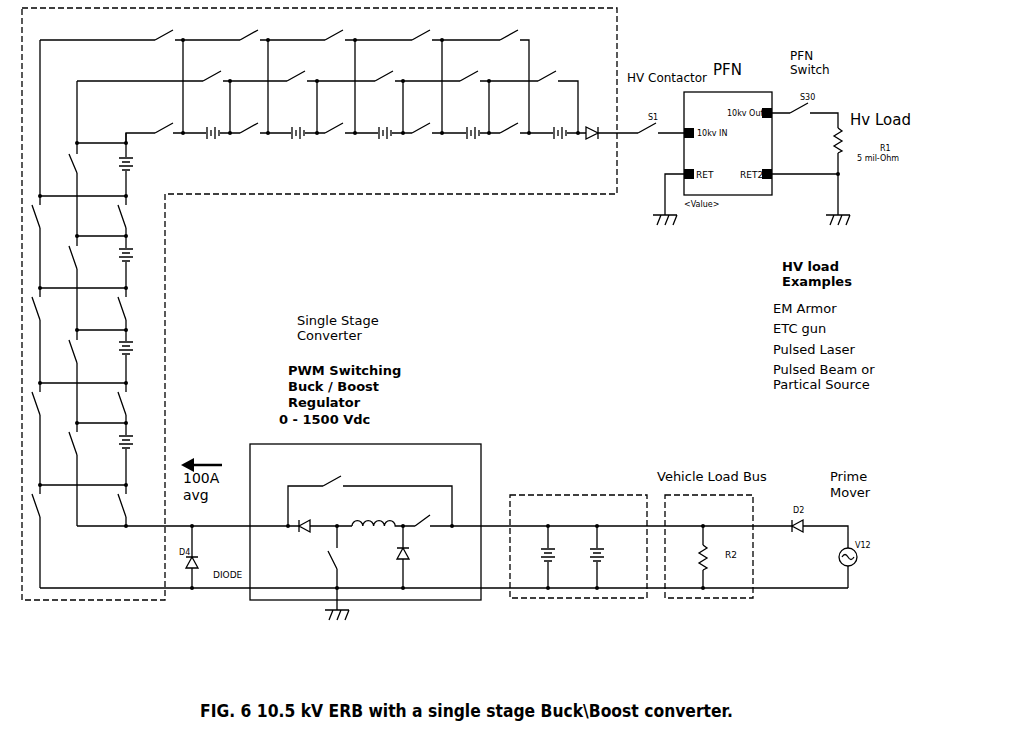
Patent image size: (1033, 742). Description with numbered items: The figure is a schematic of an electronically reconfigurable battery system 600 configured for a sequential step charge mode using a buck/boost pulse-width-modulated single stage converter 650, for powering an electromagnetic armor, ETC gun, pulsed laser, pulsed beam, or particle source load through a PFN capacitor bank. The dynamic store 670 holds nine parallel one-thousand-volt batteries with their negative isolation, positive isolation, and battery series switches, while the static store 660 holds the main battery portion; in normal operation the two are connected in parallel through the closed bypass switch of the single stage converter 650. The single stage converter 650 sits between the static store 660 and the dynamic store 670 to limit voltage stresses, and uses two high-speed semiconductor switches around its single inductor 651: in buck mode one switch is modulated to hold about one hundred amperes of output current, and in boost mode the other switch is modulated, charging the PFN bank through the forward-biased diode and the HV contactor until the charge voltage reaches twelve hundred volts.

The 10500 Volt ERB system 600 is at (514, 313).
The single stage buck/boost converter (SSG) 650 is at (521, 538).
The inductor L1 651 is at (378, 522).
The static store 660 is at (595, 600).
The dynamic store 670 is at (290, 196).